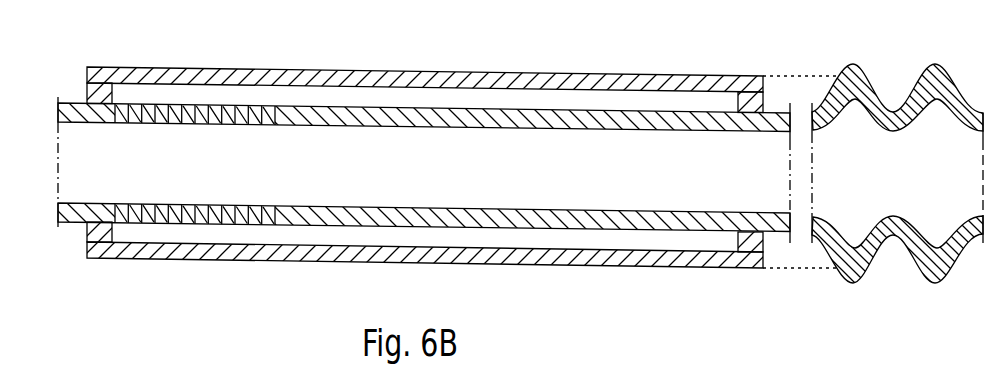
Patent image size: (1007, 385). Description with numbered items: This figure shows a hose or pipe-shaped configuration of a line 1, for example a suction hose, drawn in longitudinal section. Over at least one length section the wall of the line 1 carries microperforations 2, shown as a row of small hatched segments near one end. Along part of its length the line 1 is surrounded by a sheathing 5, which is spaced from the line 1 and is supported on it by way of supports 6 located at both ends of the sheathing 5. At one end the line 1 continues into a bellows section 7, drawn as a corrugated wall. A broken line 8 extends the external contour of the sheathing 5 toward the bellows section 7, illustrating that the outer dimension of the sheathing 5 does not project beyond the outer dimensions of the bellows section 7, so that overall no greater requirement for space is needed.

The line 1 is at (438, 108).
The microperforations 2 is at (117, 123).
The sheathing 5 is at (558, 74).
The supports 6 is at (85, 90).
The bellows section 7 is at (858, 270).
The broken line 8 is at (798, 76).